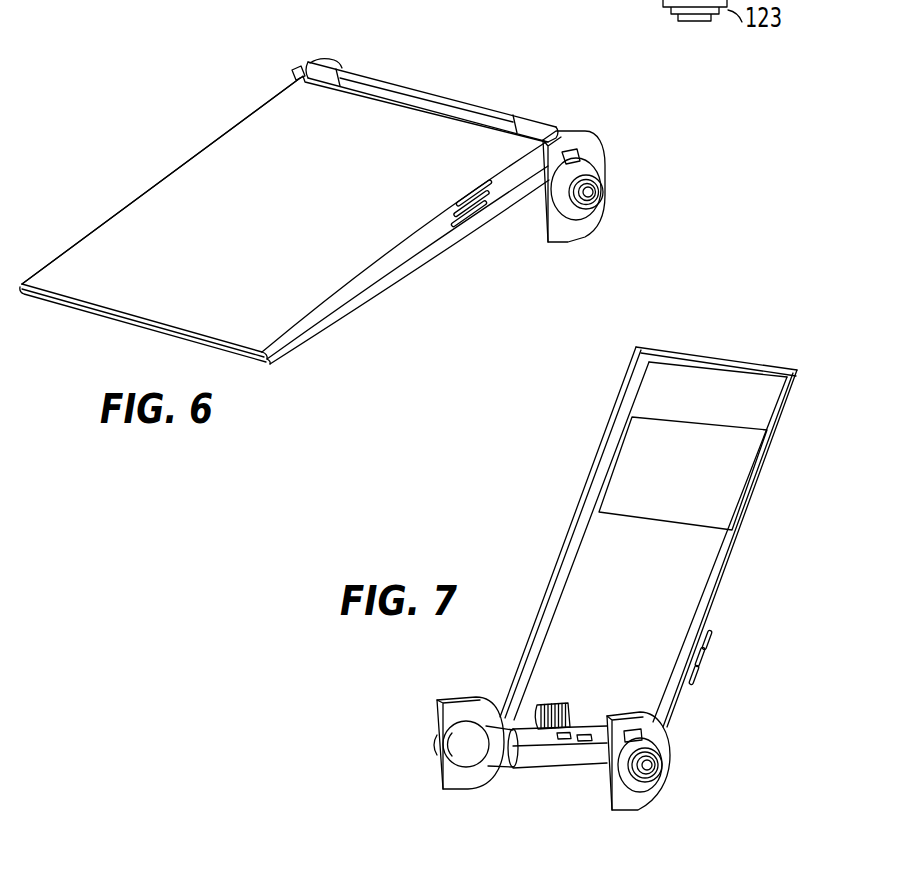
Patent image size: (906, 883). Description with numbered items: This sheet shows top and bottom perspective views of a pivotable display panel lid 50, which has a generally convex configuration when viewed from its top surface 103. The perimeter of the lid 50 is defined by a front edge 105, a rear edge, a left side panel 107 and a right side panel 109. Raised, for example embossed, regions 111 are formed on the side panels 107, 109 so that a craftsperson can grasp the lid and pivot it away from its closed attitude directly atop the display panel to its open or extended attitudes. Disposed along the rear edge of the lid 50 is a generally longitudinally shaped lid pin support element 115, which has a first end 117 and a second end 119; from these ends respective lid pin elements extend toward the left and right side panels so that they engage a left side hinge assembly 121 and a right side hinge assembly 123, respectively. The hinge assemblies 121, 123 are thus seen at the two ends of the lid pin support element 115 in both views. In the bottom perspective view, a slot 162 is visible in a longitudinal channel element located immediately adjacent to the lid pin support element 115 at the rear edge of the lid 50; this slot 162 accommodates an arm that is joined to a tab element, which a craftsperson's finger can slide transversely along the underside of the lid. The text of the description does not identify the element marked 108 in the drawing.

In FIG. 6, the lid 50 is at (152, 106).
In FIG. 7, the lid 50 is at (562, 468).
In FIG. 6, the top surface 103 is at (148, 198).
In FIG. 6, the front edge 105 is at (137, 330).
In FIG. 7, the front edge 105 is at (722, 353).
In FIG. 6, the left side panel 107 is at (263, 98).
In FIG. 7, the left side panel 107 is at (570, 523).
In FIG. 6, the hinge rod 108 is at (427, 107).
In FIG. 6, the right side panel 109 is at (405, 250).
In FIG. 7, the right side panel 109 is at (753, 508).
In FIG. 6, the raised regions 111 is at (473, 212).
In FIG. 7, the raised regions 111 is at (707, 653).
In FIG. 6, the lid pin support element 115 is at (448, 100).
In FIG. 7, the lid pin support element 115 is at (557, 762).
In FIG. 6, the first end 117 is at (345, 72).
In FIG. 6, the second end 119 is at (517, 120).
In FIG. 6, the left side hinge assembly 121 is at (328, 58).
In FIG. 7, the left side hinge assembly 121 is at (453, 697).
In FIG. 6, the right side hinge assembly 123 is at (600, 153).
In FIG. 7, the right side hinge assembly 123 is at (663, 785).
In FIG. 7, the slot 162 is at (577, 730).